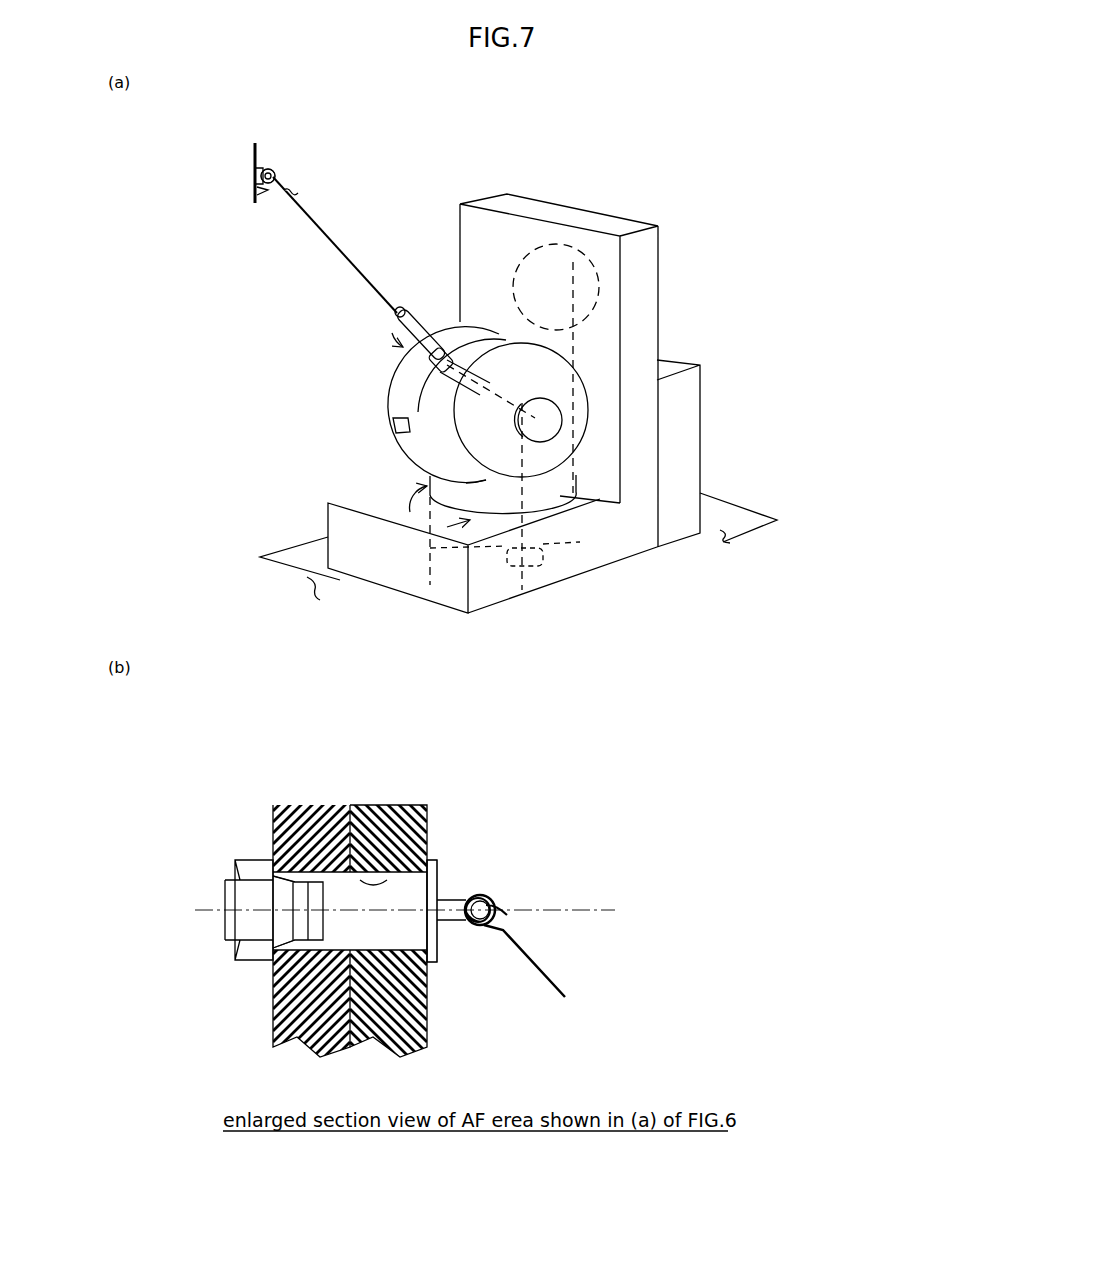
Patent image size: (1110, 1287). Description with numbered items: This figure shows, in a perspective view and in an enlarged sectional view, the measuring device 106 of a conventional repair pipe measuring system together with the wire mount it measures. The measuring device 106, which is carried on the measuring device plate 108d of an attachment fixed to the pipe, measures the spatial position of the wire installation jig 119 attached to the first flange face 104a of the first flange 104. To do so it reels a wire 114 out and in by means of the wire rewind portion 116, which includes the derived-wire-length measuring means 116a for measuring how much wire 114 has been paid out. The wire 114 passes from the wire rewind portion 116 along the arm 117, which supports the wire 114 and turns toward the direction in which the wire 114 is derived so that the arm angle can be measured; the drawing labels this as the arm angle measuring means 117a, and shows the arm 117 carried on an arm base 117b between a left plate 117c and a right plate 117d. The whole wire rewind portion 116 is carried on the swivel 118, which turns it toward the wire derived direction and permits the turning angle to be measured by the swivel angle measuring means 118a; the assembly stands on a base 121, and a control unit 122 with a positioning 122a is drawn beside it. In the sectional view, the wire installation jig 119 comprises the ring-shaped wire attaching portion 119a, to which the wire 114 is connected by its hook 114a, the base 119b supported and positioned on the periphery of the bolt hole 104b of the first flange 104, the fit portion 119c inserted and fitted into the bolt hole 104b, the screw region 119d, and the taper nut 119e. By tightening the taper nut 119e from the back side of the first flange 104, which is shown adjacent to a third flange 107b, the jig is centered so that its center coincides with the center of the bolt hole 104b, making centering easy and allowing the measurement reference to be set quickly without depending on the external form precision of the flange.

The measuring device 106 is at (587, 202).
The wire rewind portion 116 is at (590, 242).
The derived-wire-length measuring means 116a is at (561, 240).
The arm 117 is at (392, 318).
The arm angle θ1 measuring means 117a is at (405, 417).
The arm base 117b is at (432, 373).
The left plate 117c is at (440, 326).
The right plate 117d is at (545, 372).
The wire 114 is at (313, 212).
The hook 114a is at (283, 167).
The wire installation jig 119 is at (265, 156).
The wire attaching portion 119a is at (277, 169).
The base 119b is at (440, 877).
The fit portion 119c is at (340, 920).
The screw region 119d is at (300, 873).
The taper nut 119e is at (253, 860).
The first flange 104 is at (393, 800).
The first flange face 104a is at (258, 190).
The bolt hole 104b is at (378, 880).
The third flange 107b is at (303, 803).
The measuring device plate 108d is at (707, 513).
The swivel 118 is at (573, 530).
The swivel angle θ2 measuring means 118a is at (466, 523).
The base 121 is at (450, 587).
The control unit 122 is at (712, 397).
The positioning 122a is at (698, 486).